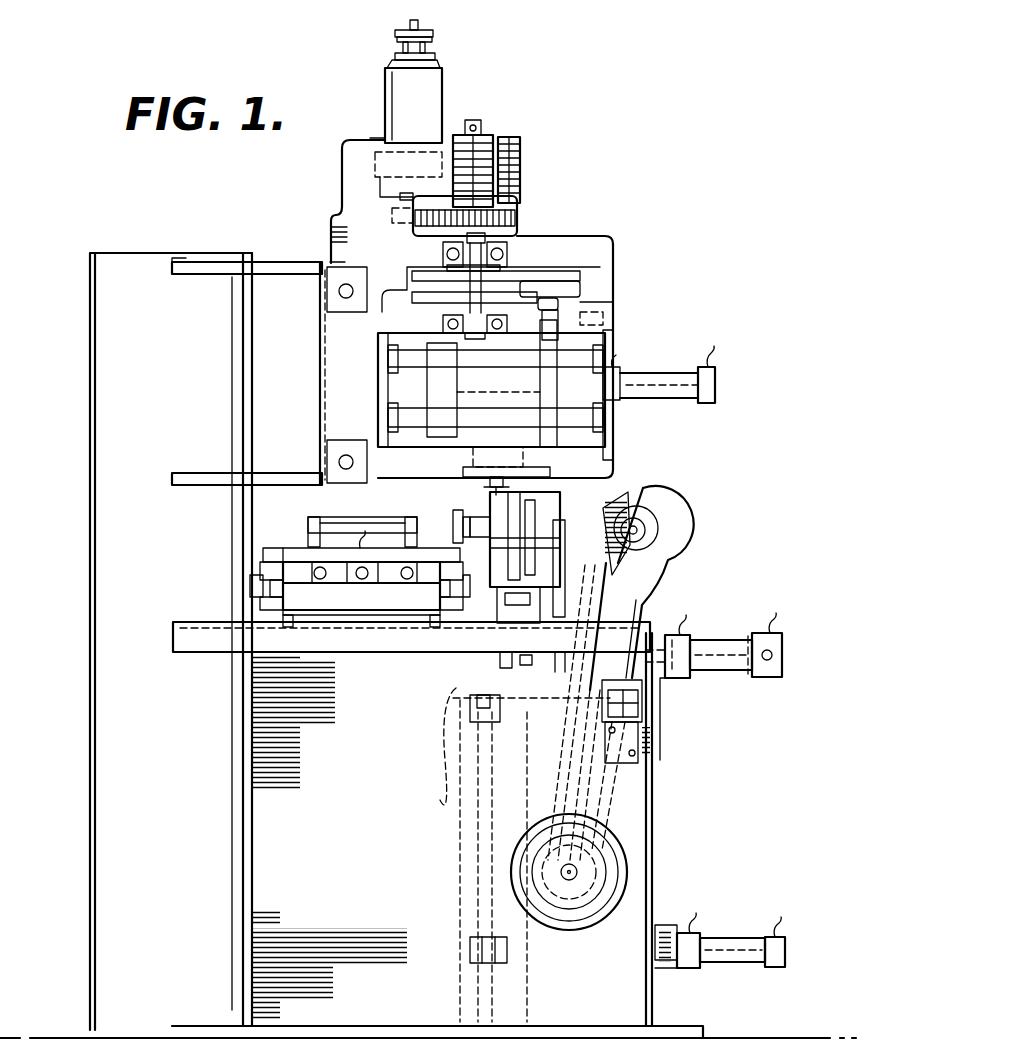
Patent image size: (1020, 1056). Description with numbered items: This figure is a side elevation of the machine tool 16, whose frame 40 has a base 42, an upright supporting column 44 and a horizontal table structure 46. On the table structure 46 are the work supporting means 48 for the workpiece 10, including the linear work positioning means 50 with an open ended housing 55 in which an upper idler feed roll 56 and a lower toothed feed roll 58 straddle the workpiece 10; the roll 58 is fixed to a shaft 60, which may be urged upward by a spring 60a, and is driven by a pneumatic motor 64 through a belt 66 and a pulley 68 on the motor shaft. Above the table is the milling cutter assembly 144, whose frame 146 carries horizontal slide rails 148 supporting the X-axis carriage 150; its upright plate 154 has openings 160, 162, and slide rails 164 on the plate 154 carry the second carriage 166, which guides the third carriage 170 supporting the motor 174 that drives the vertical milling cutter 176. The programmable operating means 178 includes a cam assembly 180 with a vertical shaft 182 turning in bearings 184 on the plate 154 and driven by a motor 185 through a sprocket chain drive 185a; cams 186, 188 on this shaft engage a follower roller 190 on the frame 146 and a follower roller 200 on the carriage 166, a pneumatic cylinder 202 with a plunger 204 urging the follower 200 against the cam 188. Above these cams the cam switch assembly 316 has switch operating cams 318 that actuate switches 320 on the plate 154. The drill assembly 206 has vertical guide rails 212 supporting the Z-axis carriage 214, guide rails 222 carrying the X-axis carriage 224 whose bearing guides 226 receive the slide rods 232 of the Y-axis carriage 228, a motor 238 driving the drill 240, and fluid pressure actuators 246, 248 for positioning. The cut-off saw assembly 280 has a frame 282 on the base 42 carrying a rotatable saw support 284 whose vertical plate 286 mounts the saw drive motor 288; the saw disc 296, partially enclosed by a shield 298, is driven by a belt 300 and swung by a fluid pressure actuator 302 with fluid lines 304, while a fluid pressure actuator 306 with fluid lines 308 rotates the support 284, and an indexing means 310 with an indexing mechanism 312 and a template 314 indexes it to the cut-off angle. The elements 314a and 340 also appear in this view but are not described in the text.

The workpiece 10 is at (545, 520).
The machine tool 16 is at (718, 106).
The frame 40 is at (88, 705).
The base 42 is at (340, 1024).
The upright supporting column 44 is at (175, 762).
The horizontal table structure 46 is at (192, 640).
The work supporting means 48 is at (605, 492).
The linear work positioning means 50 is at (540, 555).
The open ended housing 55 is at (453, 520).
The upper feed roll 56 is at (563, 493).
The lower feed roll 58 is at (500, 656).
The shaft 60 is at (517, 600).
The spring 60a is at (445, 790).
The pneumatic motor 64 is at (523, 657).
The belt 66 is at (563, 572).
The pulley 68 is at (567, 640).
The cutter assembly 144 is at (597, 216).
The cutter assembly frame 146 is at (308, 258).
The horizontal slide rails 148 is at (340, 294).
The carriage 150 is at (618, 290).
The carriage plate 154 is at (340, 252).
The opening 160 is at (617, 272).
The opening 162 is at (393, 338).
The horizontal slide rails 164 is at (409, 408).
The second carriage 166 is at (607, 348).
The third carriage 170 is at (478, 453).
The motor 174 is at (500, 457).
The milling cutter 176 is at (490, 480).
The programmable operating means 178 is at (555, 147).
The cam assembly 180 is at (396, 300).
The vertical shaft 182 is at (517, 222).
The bearings 184 is at (503, 255).
The motor 185 is at (445, 86).
The sprocket chain drive 185a is at (505, 228).
The cam 186 is at (582, 270).
The cam 188 is at (565, 298).
The follower roller 190 is at (530, 287).
The follower roller 200 is at (615, 302).
The pneumatic cylinder 202 is at (703, 392).
The plunger 204 is at (618, 372).
The drill assembly 206 is at (290, 538).
The vertical guide rails 212 is at (268, 604).
The Z-axis carriage 214 is at (258, 557).
The guide rails 222 is at (347, 612).
The X-axis carriage 224 is at (270, 642).
The bearing guides 226 is at (322, 540).
The Y-axis carriage 228 is at (393, 615).
The slide rods 232 is at (362, 620).
The motor 238 is at (470, 600).
The drill 240 is at (572, 452).
The fluid pressure actuator 246 is at (322, 622).
The fluid pressure actuator 248 is at (356, 615).
The cut-off saw assembly 280 is at (688, 590).
The frame 282 is at (450, 920).
The rotatable saw support 284 is at (605, 968).
The vertical plate 286 is at (545, 970).
The saw drive motor 288 is at (603, 882).
The saw disc 296 is at (628, 498).
The shield 298 is at (668, 514).
The belt 300 is at (590, 815).
The fluid pressure actuator 302 is at (730, 640).
The fluid lines 304 is at (682, 630).
The fluid pressure actuator 306 is at (641, 720).
The fluid lines 308 is at (655, 673).
The indexing means 310 is at (668, 912).
The indexing mechanism 312 is at (725, 962).
The template 314 is at (680, 930).
The nut 314a is at (657, 930).
The cam switch assembly 316 is at (500, 120).
The switch operating cams 318 is at (432, 135).
The switches 320 is at (512, 135).
The cap 340 is at (436, 30).